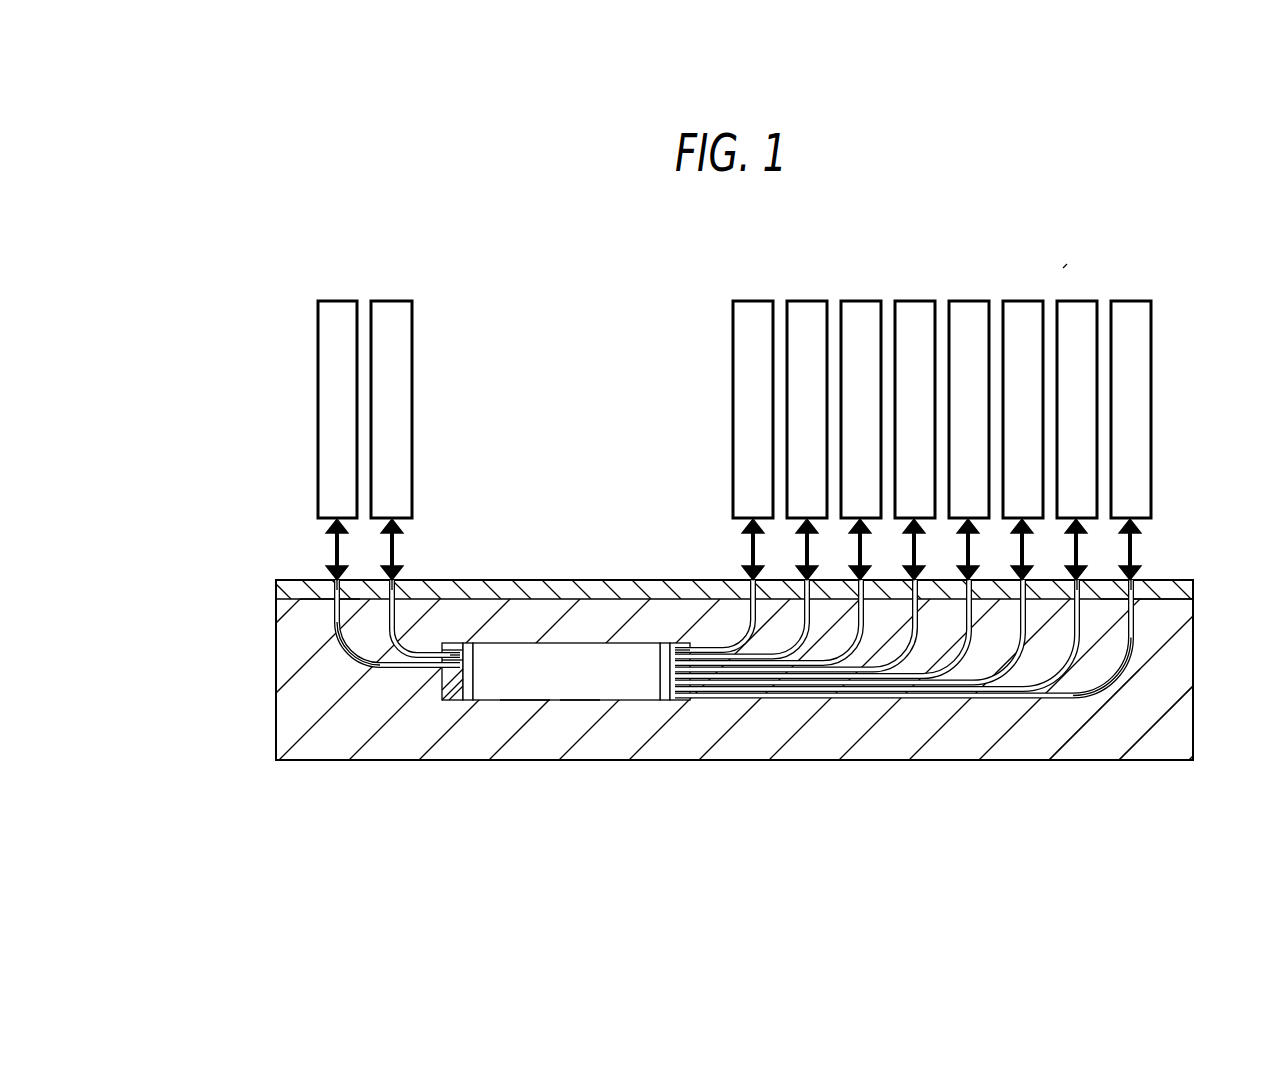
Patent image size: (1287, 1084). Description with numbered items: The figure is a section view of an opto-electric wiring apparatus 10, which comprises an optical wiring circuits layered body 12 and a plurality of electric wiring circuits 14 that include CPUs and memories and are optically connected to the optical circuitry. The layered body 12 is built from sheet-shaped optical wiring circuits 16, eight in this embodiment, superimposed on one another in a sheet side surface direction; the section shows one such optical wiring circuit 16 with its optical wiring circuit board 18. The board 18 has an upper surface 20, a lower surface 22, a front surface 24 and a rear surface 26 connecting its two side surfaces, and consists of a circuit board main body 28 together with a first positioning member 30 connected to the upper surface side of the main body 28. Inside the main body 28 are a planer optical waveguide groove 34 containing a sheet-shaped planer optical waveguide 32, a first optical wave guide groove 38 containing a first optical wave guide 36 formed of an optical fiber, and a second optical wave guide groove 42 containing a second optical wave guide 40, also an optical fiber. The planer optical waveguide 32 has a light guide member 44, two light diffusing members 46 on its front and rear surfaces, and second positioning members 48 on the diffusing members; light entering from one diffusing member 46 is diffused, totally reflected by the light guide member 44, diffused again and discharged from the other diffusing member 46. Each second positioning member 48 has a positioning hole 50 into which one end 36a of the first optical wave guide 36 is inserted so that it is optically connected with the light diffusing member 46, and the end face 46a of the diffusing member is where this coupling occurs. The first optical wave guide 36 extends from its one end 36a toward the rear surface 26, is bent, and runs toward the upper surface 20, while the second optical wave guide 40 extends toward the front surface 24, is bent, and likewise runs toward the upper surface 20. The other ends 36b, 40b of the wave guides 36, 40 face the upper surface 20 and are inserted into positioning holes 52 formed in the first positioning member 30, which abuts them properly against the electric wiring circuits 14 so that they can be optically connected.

The opto-electric wiring apparatus 10 is at (1072, 258).
The optical wiring circuits layered body 12 is at (240, 598).
The electric wiring circuits 14 is at (338, 303).
The optical wiring circuit 16 is at (416, 770).
The optical wiring circuit board 18 is at (1178, 745).
The upper surface 20 is at (548, 580).
The lower surface 22 is at (736, 762).
The front surface 24 is at (1195, 672).
The rear surface 26 is at (276, 667).
The circuit board main body 28 is at (1052, 730).
The first positioning member 30 is at (612, 580).
The planer optical waveguide 32 is at (623, 712).
The planer optical waveguide groove 34 is at (573, 685).
The first optical wave guide 36 is at (335, 618).
The one end of the first optical wave guide 36a is at (470, 645).
The other end of the first optical wave guide 36b is at (337, 578).
The first optical wave guide groove 38 is at (365, 672).
The second optical wave guide 40 is at (945, 690).
The other end of the second optical wave guide 40b is at (1082, 578).
The second optical wave guide groove 42 is at (1112, 690).
The light guide member 44 is at (535, 690).
The light diffusing member 46 is at (462, 700).
The upper end of electrode 46a is at (668, 645).
The second positioning member 48 is at (447, 700).
The positioning hole 50 is at (452, 643).
The positioning hole 52 is at (328, 582).